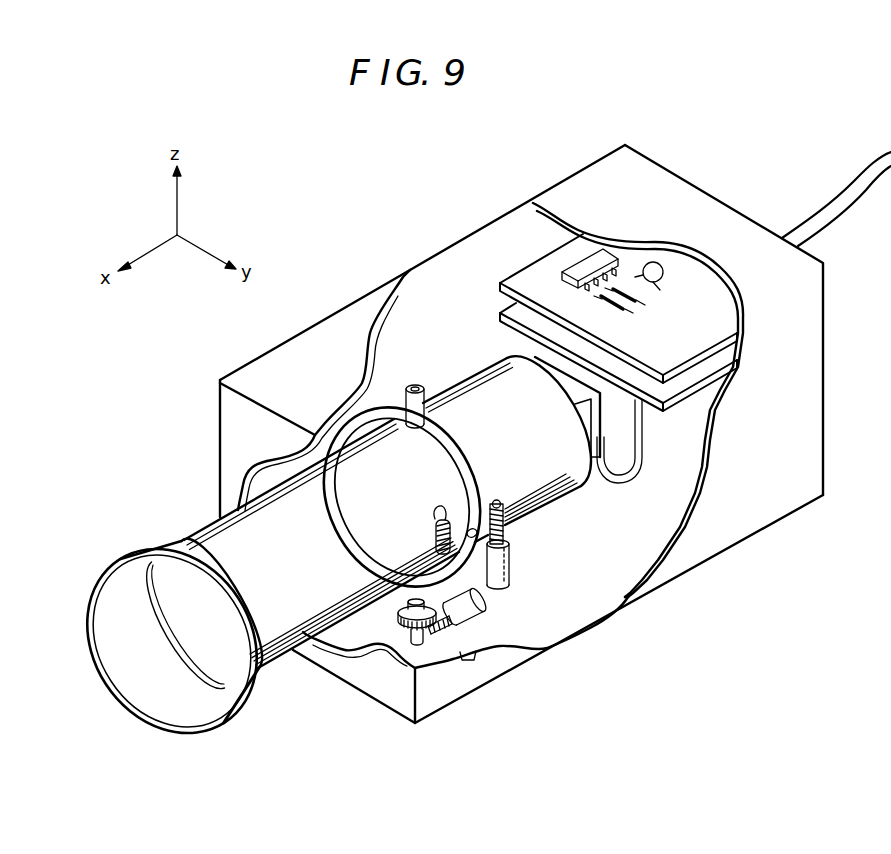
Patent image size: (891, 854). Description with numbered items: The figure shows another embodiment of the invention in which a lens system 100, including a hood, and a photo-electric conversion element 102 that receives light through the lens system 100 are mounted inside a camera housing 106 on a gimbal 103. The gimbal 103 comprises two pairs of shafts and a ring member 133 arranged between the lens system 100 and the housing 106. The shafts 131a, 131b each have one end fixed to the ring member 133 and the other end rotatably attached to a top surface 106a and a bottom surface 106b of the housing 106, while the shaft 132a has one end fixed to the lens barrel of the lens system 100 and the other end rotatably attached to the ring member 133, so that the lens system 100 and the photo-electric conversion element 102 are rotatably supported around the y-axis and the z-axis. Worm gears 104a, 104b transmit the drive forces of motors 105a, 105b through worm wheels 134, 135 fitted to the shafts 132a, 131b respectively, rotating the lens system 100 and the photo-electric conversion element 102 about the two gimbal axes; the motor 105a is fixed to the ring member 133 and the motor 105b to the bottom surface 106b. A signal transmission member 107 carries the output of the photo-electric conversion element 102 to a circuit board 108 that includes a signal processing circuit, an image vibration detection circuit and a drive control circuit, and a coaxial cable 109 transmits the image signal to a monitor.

The lens system 100 is at (210, 530).
The photo-electric conversion element 102 is at (595, 457).
The gimbal 103 is at (541, 450).
The worm gear 104a is at (540, 517).
The worm gear 104b is at (448, 628).
The motor 105a is at (510, 563).
The motor 105b is at (493, 597).
The camera housing 106 is at (660, 178).
The top surface 106a is at (327, 328).
The bottom surface 106b is at (592, 628).
The signal transmission member 107 is at (647, 440).
The circuit board 108 is at (503, 310).
The coaxial cable 109 is at (858, 172).
The shaft 131a is at (411, 386).
The shaft 131b is at (468, 654).
The shaft 132a is at (435, 510).
The ring member 133 is at (443, 447).
The worm wheel 134 is at (436, 538).
The worm wheel 135 is at (398, 616).